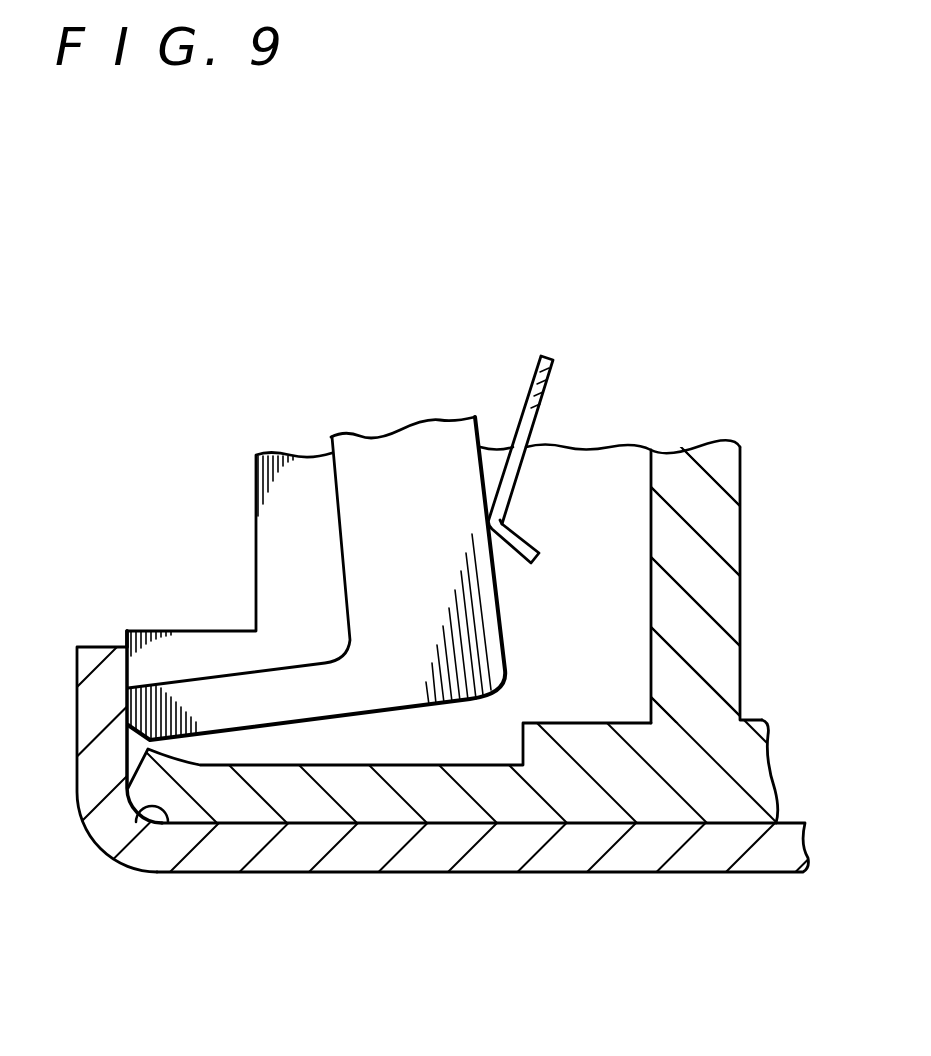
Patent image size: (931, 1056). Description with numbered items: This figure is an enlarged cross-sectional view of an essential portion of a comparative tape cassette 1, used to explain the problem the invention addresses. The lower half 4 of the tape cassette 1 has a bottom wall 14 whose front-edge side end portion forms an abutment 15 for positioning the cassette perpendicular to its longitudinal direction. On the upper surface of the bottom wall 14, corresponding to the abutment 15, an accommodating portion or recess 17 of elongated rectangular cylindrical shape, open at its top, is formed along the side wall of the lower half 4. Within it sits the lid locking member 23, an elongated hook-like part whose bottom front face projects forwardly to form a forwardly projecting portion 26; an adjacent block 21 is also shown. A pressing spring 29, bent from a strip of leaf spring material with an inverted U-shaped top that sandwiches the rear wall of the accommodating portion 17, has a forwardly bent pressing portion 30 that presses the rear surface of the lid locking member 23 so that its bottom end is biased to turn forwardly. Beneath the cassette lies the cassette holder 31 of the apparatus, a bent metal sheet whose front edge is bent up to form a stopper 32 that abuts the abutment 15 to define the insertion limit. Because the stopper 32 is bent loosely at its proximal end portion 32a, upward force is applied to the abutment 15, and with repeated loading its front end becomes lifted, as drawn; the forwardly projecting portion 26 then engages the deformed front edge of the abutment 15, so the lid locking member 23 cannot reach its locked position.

The tape cassette 1 is at (742, 453).
The lower half 4 is at (740, 625).
The bottom wall 14 is at (585, 742).
The side end portion (abutment) 15 is at (125, 632).
The accommodating portion (recess) 17 is at (612, 617).
The block member 21 is at (297, 537).
The lid locking member 23 is at (497, 613).
The forwardly projecting portion 26 is at (127, 703).
The pressing spring 29 is at (517, 468).
The pressing portion 30 is at (487, 528).
The cassette holder 31 is at (617, 860).
The stopper 32 is at (93, 658).
The proximal end portion 32a is at (163, 826).